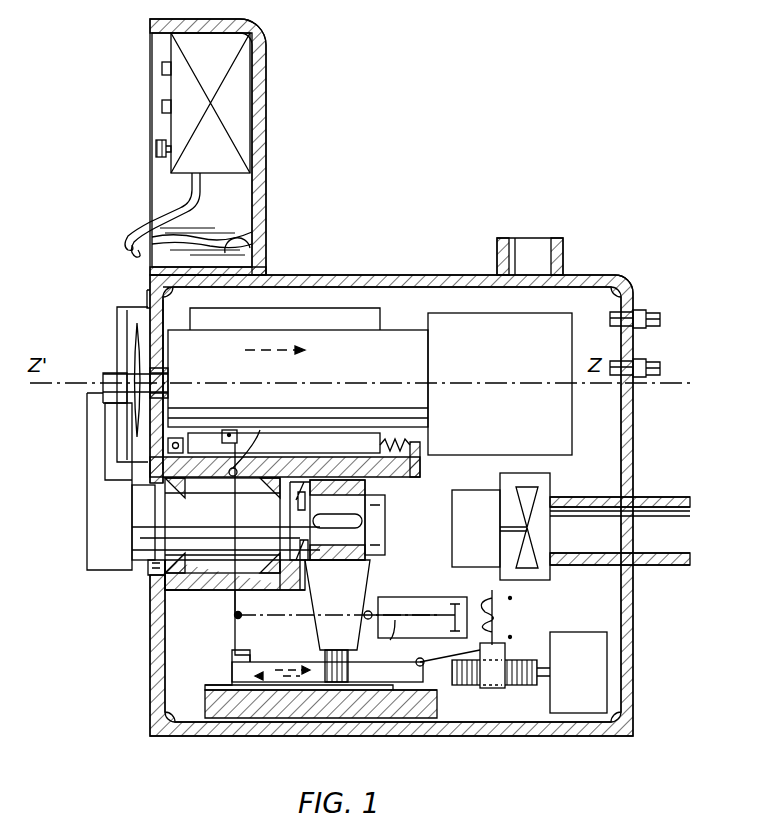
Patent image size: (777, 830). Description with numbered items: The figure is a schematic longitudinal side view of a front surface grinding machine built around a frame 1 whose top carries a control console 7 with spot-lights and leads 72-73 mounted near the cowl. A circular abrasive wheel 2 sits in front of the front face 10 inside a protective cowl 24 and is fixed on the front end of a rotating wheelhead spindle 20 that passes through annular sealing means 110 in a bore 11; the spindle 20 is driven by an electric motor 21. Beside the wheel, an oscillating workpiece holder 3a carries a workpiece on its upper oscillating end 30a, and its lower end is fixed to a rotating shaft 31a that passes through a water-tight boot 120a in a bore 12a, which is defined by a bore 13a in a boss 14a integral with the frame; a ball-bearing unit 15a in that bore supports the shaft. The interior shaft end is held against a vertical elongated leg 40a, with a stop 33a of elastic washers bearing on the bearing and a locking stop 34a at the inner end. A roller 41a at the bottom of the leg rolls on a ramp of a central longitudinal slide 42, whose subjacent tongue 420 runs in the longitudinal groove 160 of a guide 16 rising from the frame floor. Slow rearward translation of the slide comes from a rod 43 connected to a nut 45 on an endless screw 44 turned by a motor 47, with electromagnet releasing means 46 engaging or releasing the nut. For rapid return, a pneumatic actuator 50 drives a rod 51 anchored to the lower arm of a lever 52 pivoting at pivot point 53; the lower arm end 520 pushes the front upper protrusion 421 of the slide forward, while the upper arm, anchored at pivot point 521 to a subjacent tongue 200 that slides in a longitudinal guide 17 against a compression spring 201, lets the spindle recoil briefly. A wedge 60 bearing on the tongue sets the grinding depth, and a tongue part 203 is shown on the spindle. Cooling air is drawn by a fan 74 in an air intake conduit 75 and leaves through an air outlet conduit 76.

The frame 1 is at (440, 275).
The control console 7 is at (171, 122).
The spot-lights and flexible electrical conductor leads 72-73 is at (130, 226).
The front face 10 is at (147, 668).
The bore 11 is at (163, 340).
The annular sealing means 110 is at (163, 366).
The circular abrasive wheel 2 is at (133, 330).
The protective cowl 24 is at (117, 340).
The upper oscillating end 30a is at (105, 400).
The oscillating workpiece holder 3a is at (100, 545).
The rotating shaft 31a is at (145, 540).
The water-tight boot 120a is at (150, 572).
The bore 12a is at (165, 590).
The bore 13a is at (240, 580).
The boss 14a is at (280, 578).
The ball-bearing unit 15a is at (253, 490).
The wheelhead spindle 20 is at (393, 359).
The piston step 203 is at (360, 319).
The electric motor 21 is at (520, 342).
The subjacent tongue 200 is at (340, 440).
The compression spring 201 is at (415, 432).
The longitudinal guide 17 is at (405, 475).
The wedge 60 is at (178, 438).
The pivot point 521 is at (232, 430).
The lever 52 is at (235, 615).
The pivot point 53 is at (260, 430).
The stop 33a is at (312, 566).
The locking stop 34a is at (385, 515).
The vertical elongated leg 40a is at (358, 560).
The pneumatic actuator 50 is at (425, 605).
The rod 51 is at (400, 638).
The lower arm end 520 is at (330, 652).
The central longitudinal slide 42 is at (393, 685).
The front upper protrusion 421 is at (232, 658).
The subjacent tongue 420 is at (210, 688).
The roller 41a is at (330, 690).
The guide 16 is at (300, 700).
The longitudinal groove 160 is at (215, 700).
The rod 43 is at (435, 662).
The endless screw 44 is at (515, 680).
The nut 45 is at (500, 656).
The electromagnet releasing means 46 is at (510, 598).
The motor 47 is at (585, 682).
The fan 74 is at (530, 495).
The air intake conduit 75 is at (675, 535).
The air outlet conduit 76 is at (538, 250).